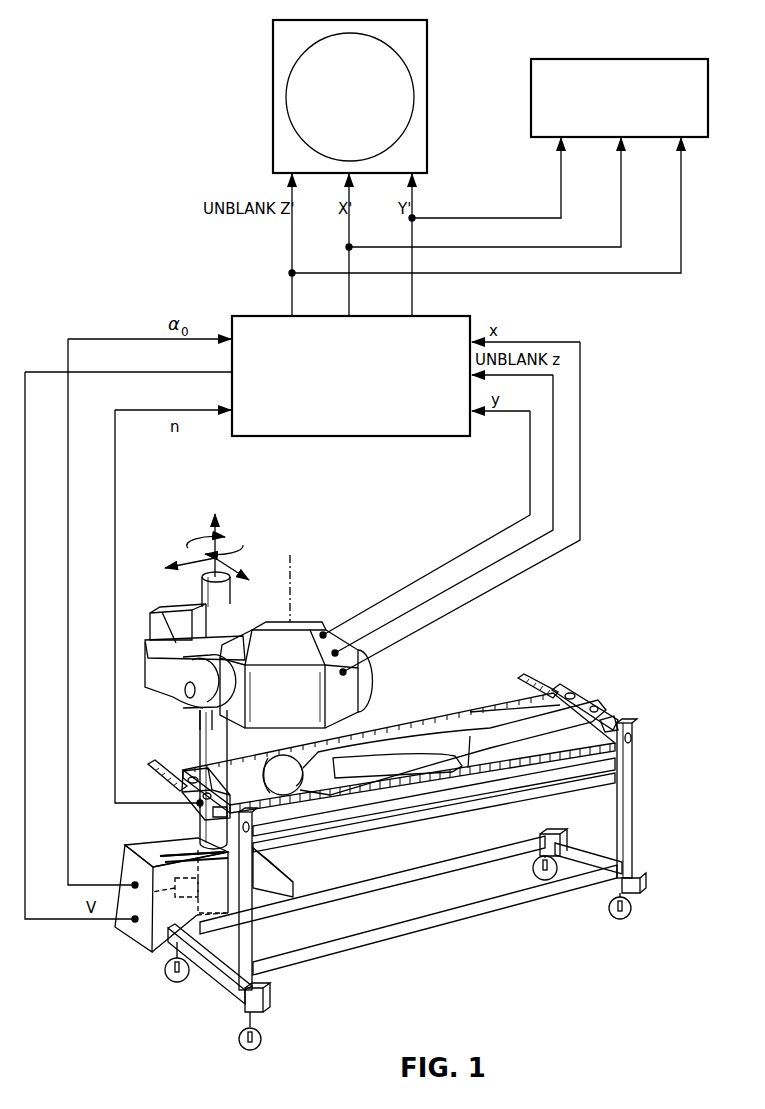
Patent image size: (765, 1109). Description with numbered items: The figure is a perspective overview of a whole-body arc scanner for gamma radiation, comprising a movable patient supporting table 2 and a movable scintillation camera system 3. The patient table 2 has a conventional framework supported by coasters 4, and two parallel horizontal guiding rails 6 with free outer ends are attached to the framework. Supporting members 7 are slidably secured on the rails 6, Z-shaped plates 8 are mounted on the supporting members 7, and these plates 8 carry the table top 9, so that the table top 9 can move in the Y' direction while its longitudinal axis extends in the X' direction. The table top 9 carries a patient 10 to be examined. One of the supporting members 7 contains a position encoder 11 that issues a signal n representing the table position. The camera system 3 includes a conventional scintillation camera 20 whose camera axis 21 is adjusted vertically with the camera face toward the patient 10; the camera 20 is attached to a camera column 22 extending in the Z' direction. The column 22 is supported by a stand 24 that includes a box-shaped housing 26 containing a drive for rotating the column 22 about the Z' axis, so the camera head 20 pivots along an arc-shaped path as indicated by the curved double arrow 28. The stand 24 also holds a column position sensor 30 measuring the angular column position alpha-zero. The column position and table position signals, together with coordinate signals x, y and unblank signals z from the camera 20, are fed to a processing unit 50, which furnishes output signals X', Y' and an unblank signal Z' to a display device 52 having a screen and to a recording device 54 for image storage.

The patient supporting table 2 is at (636, 818).
The scintillation camera system 3 is at (178, 700).
The coasters 4 is at (178, 982).
The horizontal guiding rails 6 is at (150, 766).
The supporting members 7 is at (190, 800).
The Z-shaped plates 8 is at (195, 768).
The table top 9 is at (478, 712).
The patient 10 is at (428, 740).
The position encoder 11 is at (198, 805).
The scintillation camera 20 is at (344, 692).
The camera axis 21 is at (291, 592).
The camera column 22 is at (228, 601).
The stand 24 is at (122, 858).
The box-shaped housing 26 is at (150, 848).
The curved double arrow 28 is at (232, 536).
The column position sensor 30 is at (178, 897).
The processing unit 50 is at (455, 325).
The display device 52 is at (427, 32).
The recording device 54 is at (695, 70).